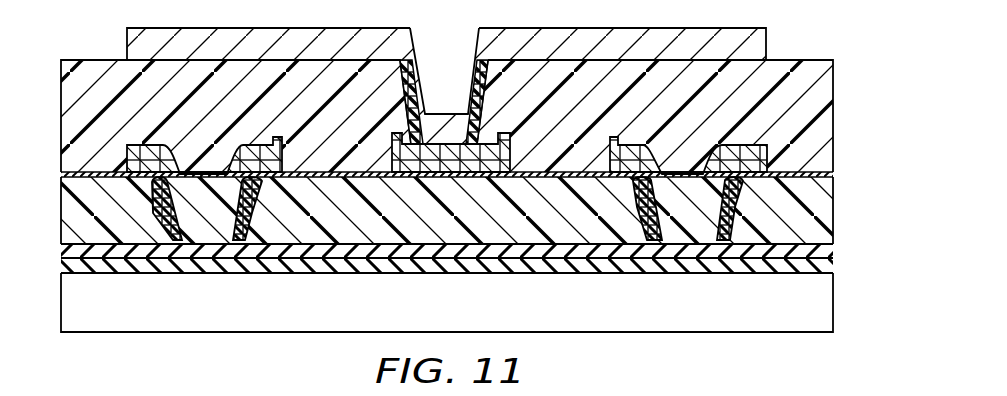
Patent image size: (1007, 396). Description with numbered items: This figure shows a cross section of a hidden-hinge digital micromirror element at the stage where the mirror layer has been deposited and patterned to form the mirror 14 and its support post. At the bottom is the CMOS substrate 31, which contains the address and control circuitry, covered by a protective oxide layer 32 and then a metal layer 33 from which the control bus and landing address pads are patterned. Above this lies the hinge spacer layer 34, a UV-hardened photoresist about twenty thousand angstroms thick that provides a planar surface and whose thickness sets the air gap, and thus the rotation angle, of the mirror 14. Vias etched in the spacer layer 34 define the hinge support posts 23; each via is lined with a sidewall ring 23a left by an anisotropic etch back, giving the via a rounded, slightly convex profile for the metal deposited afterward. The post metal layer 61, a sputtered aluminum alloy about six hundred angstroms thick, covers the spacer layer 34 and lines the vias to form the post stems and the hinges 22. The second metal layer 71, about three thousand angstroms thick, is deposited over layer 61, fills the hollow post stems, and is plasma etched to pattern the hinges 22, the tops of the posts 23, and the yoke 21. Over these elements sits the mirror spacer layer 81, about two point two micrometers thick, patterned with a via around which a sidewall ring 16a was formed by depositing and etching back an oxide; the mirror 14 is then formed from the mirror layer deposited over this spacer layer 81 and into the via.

The mirror 14 is at (767, 42).
The sidewall ring 16a is at (470, 72).
The mirror spacer layer 81 is at (347, 120).
The second metal layer 71 is at (439, 127).
The hinge support post 23 is at (447, 155).
The yoke 21 is at (451, 152).
The post metal layer 61 is at (447, 150).
The hinge 22 is at (588, 170).
The sidewall ring 23a is at (237, 203).
The hinge spacer layer 34 is at (464, 224).
The metal layer 33 is at (836, 245).
The protective oxide layer 32 is at (836, 267).
The CMOS substrate 31 is at (464, 313).